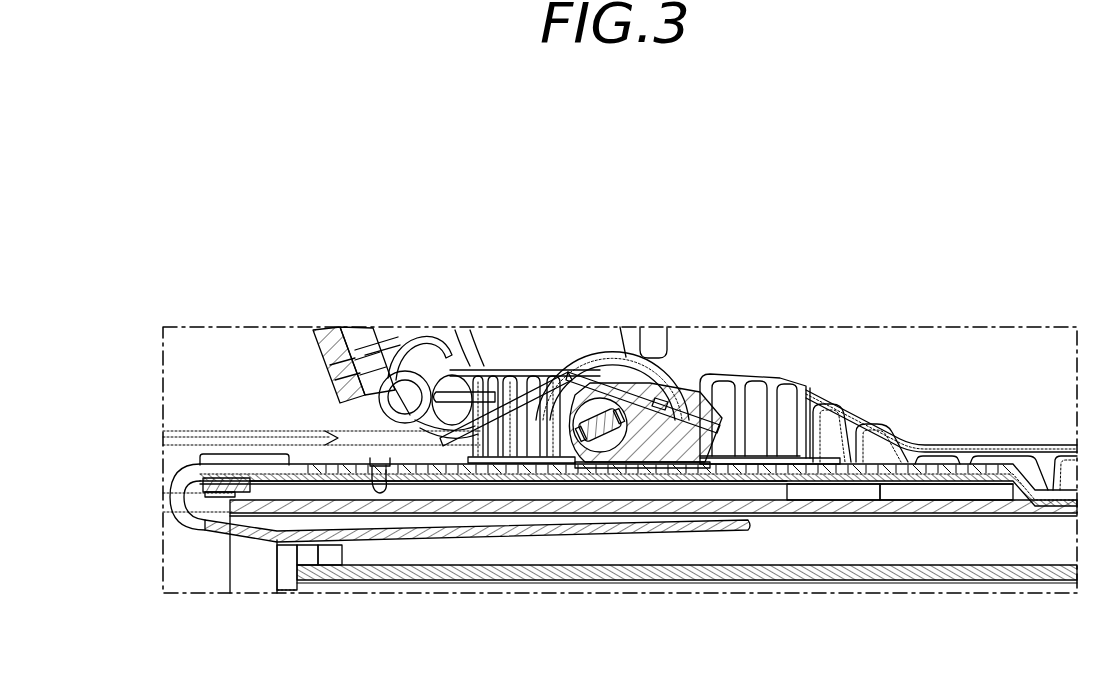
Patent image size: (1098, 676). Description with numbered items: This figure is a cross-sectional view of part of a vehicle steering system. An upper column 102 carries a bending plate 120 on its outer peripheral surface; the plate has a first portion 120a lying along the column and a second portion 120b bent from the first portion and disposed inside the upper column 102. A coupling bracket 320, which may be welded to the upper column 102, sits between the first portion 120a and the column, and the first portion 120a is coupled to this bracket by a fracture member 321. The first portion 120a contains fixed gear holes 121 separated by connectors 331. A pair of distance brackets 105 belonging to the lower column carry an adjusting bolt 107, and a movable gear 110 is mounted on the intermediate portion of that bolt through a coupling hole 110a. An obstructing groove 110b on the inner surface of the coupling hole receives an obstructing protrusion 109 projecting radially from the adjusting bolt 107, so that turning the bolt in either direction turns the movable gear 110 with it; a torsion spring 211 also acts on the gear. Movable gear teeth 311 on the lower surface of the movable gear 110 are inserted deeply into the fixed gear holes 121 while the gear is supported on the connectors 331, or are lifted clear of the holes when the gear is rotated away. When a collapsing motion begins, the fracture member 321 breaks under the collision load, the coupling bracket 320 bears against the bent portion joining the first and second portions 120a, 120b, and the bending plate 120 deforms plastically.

The upper column 102 is at (878, 504).
The distance brackets 105 is at (507, 388).
The adjusting bolt 107 is at (594, 413).
The obstructing protrusion 109 is at (583, 420).
The movable gear 110 is at (660, 470).
The coupling hole 110a is at (615, 398).
The obstructing groove 110b is at (662, 480).
The bending plate 120 is at (168, 458).
The first portion 120a is at (268, 462).
The second portion 120b is at (240, 536).
The fixed gear holes 121 is at (518, 476).
The torsion spring 211 is at (381, 372).
The movable gear teeth 311 is at (633, 432).
The coupling bracket 320 is at (446, 498).
The fracture member 321 is at (378, 492).
The connectors 331 is at (588, 470).